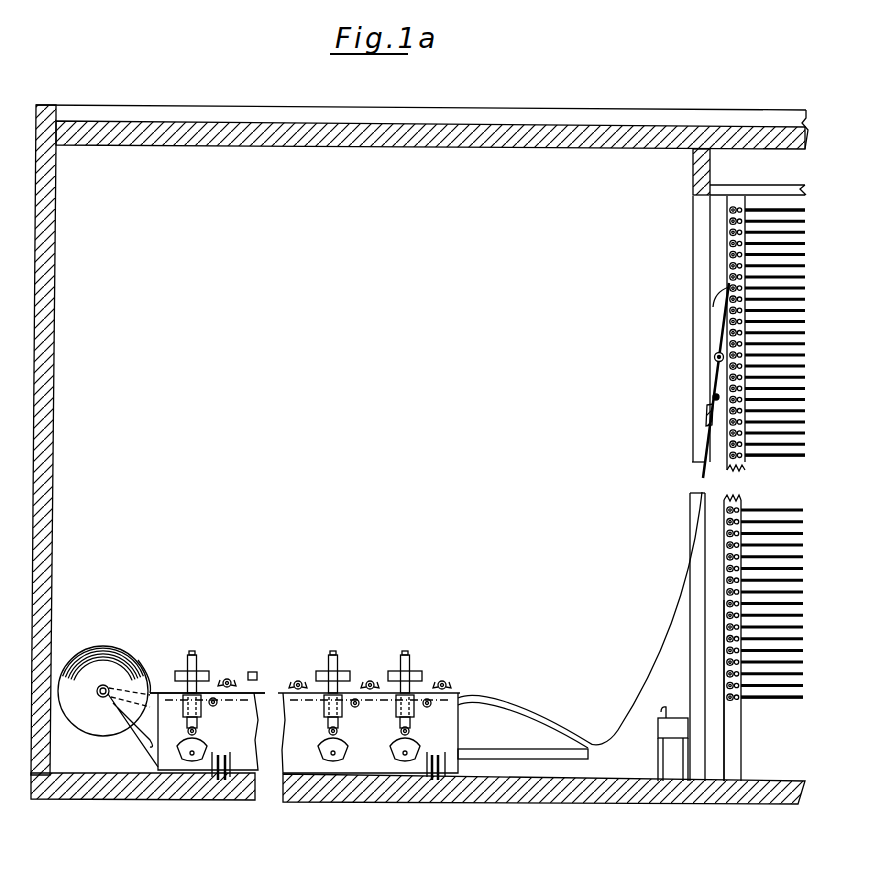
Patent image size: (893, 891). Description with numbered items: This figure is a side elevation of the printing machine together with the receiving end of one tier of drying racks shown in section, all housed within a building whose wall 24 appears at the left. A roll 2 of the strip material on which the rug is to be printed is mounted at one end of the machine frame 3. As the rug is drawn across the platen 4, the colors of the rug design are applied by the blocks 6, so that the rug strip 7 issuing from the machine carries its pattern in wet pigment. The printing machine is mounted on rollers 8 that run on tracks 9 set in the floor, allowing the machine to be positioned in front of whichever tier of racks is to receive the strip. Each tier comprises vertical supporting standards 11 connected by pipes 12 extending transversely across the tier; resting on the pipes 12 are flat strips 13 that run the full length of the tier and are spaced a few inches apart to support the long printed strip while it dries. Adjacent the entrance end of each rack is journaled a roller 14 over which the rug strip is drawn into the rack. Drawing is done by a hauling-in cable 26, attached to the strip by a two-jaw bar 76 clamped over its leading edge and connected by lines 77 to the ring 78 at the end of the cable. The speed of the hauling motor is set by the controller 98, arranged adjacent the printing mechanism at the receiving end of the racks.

The roll 2 is at (107, 648).
The machine frame 3 is at (376, 757).
The platen 4 is at (252, 700).
The blocks 6 is at (206, 675).
The rug strip 7 is at (517, 710).
The rollers 8 is at (224, 755).
The tracks 9 is at (221, 780).
The vertical supporting standards 11 is at (735, 718).
The pipes 12 is at (739, 457).
The flat strips 13 is at (801, 457).
The roller 14 is at (731, 211).
The wall 24 is at (49, 260).
The hauling-in cable 26 is at (726, 320).
The two-jaw bar 76 is at (705, 413).
The lines 77 is at (713, 396).
The ring 78 is at (715, 357).
The controller 98 is at (681, 722).